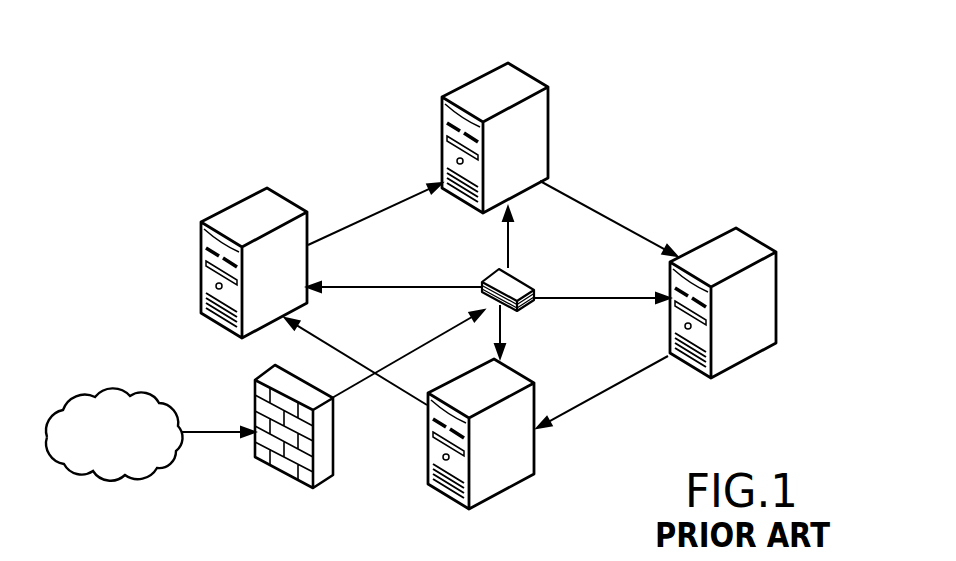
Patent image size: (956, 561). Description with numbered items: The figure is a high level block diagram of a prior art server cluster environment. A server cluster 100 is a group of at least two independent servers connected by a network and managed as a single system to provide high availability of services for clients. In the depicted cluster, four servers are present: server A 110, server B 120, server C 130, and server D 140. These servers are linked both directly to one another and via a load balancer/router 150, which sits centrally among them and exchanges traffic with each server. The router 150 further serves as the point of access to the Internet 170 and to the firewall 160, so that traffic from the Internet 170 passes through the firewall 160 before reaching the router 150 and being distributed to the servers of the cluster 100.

The server cluster 100 is at (760, 81).
The server A 110 is at (246, 203).
The server B 120 is at (484, 73).
The server C 130 is at (750, 233).
The server D 140 is at (536, 457).
The load balancer/router 150 is at (524, 279).
The firewall 160 is at (334, 437).
The Internet 170 is at (158, 470).